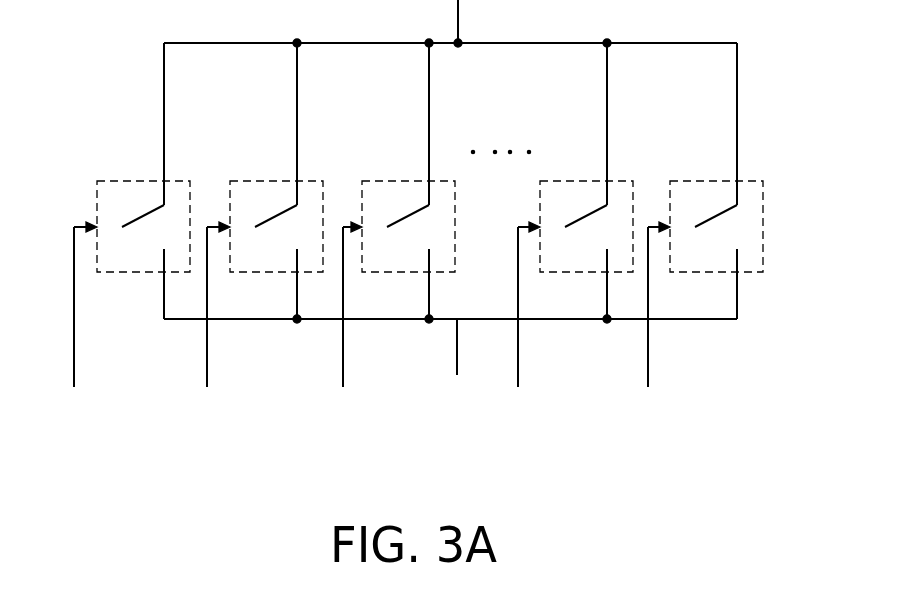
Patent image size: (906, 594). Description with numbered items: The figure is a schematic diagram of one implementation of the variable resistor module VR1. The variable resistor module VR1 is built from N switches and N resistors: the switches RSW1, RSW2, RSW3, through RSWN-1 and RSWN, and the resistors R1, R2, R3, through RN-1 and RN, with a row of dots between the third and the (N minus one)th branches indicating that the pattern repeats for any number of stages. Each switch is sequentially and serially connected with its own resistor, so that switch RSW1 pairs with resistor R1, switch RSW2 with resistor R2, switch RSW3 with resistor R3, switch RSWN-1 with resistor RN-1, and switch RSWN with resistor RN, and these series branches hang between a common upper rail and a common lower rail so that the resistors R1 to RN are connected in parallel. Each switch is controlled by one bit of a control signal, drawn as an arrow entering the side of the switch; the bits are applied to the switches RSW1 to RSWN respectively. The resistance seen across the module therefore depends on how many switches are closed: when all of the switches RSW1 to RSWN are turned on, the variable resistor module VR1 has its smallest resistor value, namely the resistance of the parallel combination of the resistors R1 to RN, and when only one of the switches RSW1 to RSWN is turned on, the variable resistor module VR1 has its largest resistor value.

The variable resistor module VR1 is at (788, 484).
The first resistor R1 is at (143, 157).
The second resistor R2 is at (276, 157).
The third resistor R3 is at (408, 157).
The (N-1)th resistor RN-1 is at (585, 157).
The Nth resistor RN is at (716, 157).
The first switch RSW1 is at (127, 273).
The second switch RSW2 is at (260, 273).
The third switch RSW3 is at (392, 273).
The (N-1)th switch RSWN-1 is at (570, 273).
The Nth switch RSWN is at (700, 273).